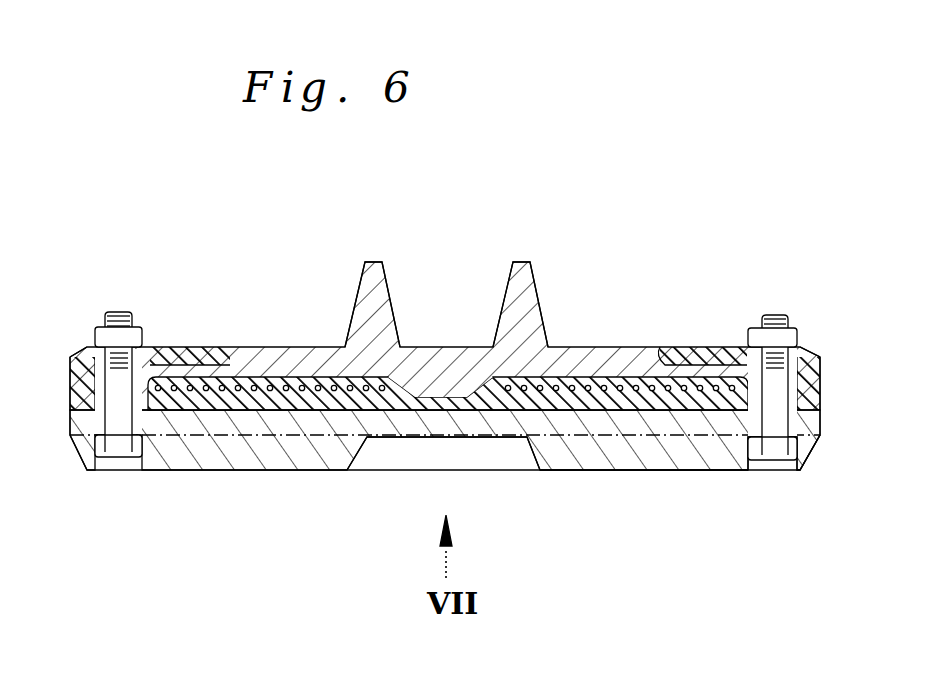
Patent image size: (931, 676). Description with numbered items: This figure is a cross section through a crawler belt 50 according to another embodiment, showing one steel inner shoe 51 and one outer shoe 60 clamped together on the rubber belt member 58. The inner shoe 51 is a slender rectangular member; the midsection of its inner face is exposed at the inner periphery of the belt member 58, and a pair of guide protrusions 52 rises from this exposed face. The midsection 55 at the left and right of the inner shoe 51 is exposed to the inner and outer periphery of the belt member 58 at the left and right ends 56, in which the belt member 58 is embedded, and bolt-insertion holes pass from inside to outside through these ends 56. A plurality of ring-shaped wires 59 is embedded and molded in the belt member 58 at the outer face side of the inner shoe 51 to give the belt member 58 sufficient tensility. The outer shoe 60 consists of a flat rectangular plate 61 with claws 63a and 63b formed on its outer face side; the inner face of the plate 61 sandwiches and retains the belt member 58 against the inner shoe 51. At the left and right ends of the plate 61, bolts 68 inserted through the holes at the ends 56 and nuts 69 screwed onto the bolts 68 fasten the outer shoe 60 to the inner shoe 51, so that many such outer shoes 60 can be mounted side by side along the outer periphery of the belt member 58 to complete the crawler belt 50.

The crawler belt 50 is at (656, 262).
The inner shoe 51 is at (292, 338).
The guide protrusion 52 is at (376, 262).
The midsection 55 is at (692, 365).
The left and right ends 56 is at (90, 357).
The belt member 58 is at (516, 403).
The ring-shaped wire 59 is at (607, 383).
The outer shoe 60 is at (291, 480).
The plate 61 is at (428, 425).
The claw 63a is at (637, 453).
The claw 63b is at (740, 457).
The bolt 68 is at (117, 449).
The nut 69 is at (142, 330).